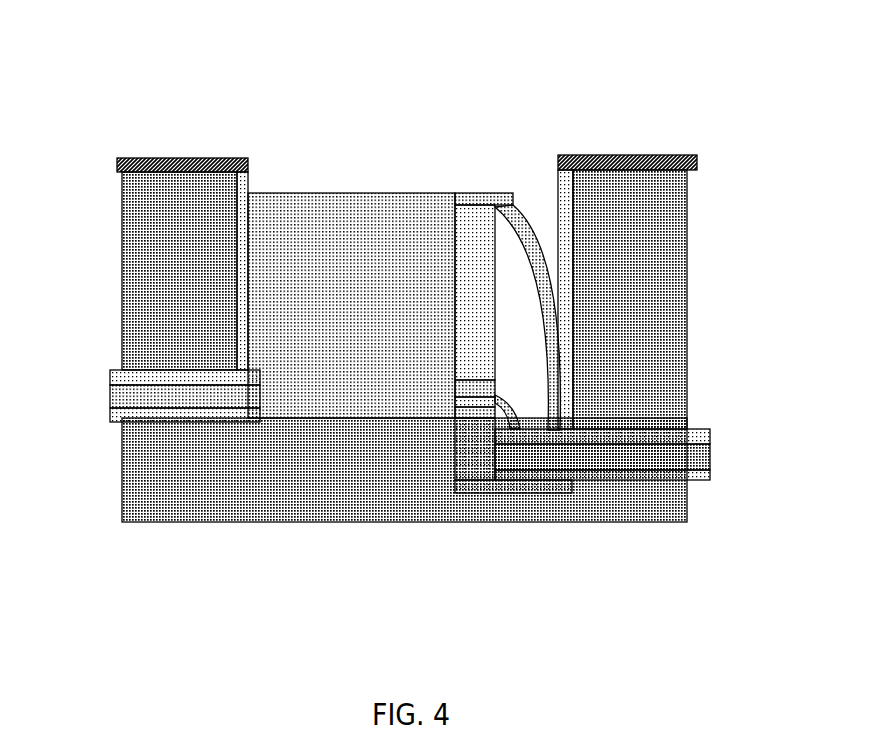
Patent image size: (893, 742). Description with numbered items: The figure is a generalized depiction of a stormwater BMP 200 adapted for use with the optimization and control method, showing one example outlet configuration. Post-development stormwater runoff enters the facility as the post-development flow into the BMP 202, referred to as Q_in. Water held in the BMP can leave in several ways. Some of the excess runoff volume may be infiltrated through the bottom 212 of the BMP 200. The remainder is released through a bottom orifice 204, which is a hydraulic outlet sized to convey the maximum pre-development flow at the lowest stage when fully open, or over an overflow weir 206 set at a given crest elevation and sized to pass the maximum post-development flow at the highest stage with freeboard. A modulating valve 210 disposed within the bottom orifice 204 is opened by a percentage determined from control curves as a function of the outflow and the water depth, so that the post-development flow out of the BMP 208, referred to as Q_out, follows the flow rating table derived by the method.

The stormwater BMP 200 is at (362, 98).
The post-development flow into the BMP 202 is at (126, 395).
The bottom orifice 204 is at (486, 397).
The overflow weir 206 is at (484, 196).
The post-development flow out of the BMP 208 is at (690, 455).
The modulating valve 210 is at (492, 428).
The bottom of the BMP 212 is at (436, 432).